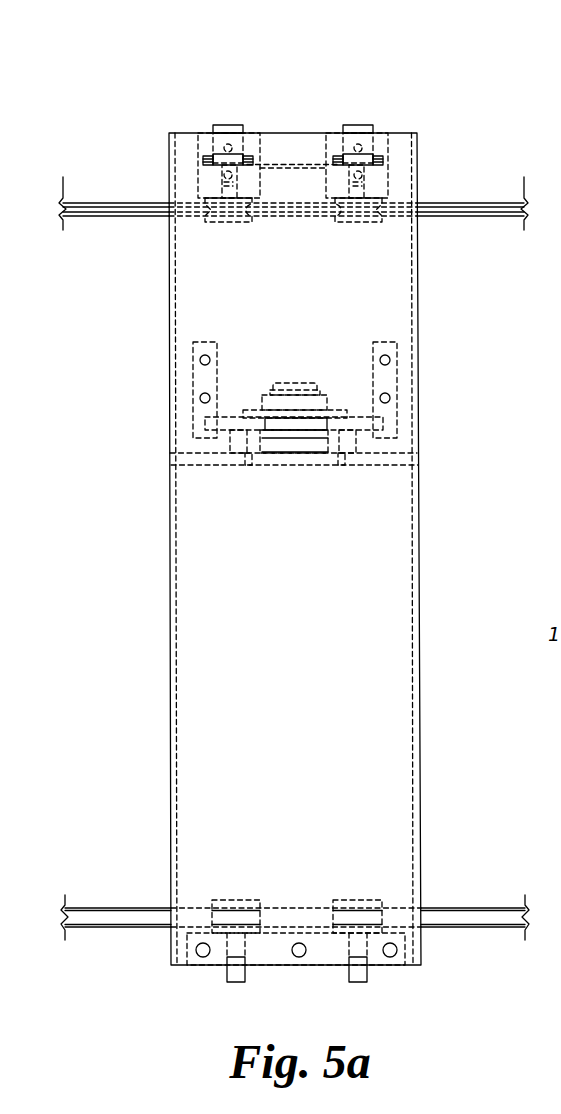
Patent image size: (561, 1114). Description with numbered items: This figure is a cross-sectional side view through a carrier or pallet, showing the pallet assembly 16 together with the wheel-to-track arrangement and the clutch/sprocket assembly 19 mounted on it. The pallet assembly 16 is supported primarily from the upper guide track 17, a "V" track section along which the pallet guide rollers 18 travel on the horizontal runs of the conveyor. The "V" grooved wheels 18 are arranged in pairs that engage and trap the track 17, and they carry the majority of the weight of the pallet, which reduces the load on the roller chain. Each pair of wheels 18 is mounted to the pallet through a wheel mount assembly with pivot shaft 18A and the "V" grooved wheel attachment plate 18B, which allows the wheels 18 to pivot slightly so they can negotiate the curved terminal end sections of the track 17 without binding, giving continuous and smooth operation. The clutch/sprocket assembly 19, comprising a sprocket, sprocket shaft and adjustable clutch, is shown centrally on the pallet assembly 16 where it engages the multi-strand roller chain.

The pallet assembly 16 is at (232, 664).
The upper guide track 17 is at (100, 194).
The pallet guide rollers 18 is at (237, 223).
The pivot shaft 18A is at (350, 125).
The "V" grooved wheel attachment plate 18B is at (192, 176).
The clutch/sprocket assembly 19 is at (240, 407).